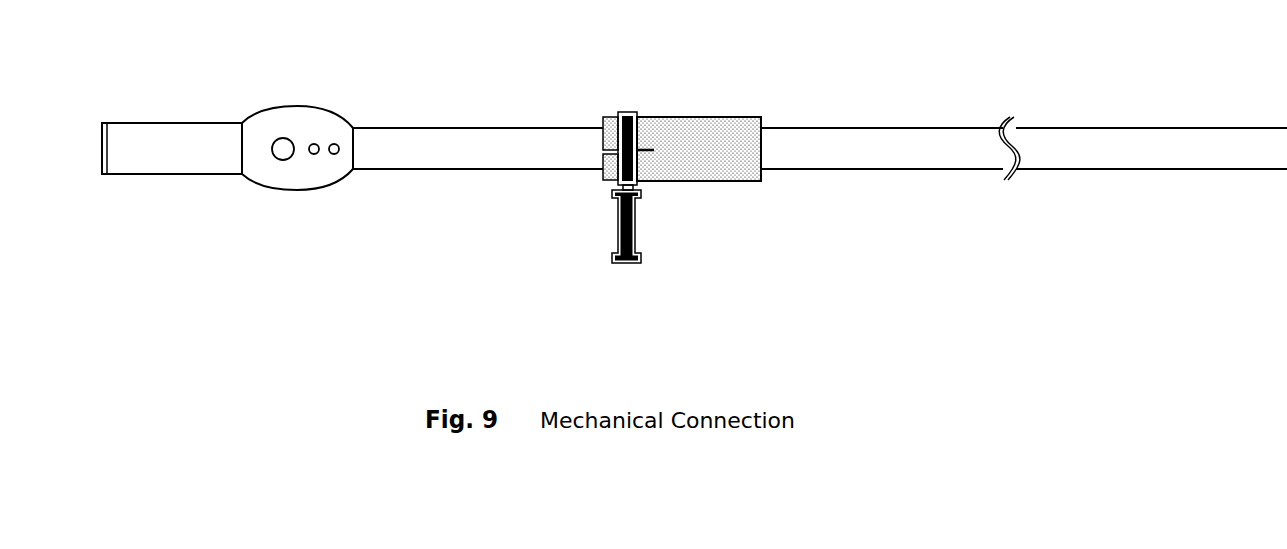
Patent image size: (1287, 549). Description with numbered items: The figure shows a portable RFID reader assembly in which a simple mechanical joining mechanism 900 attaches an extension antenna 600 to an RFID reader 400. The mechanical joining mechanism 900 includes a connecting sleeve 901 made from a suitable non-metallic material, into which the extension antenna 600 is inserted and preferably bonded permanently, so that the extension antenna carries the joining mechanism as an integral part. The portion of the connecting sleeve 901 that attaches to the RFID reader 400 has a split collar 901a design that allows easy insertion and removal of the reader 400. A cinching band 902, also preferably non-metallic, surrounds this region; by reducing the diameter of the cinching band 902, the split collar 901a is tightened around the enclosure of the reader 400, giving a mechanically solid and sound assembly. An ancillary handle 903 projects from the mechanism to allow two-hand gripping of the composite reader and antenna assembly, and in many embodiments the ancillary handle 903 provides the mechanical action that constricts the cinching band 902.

The RFID reader 400 is at (342, 190).
The extension antenna 600 is at (1028, 180).
The mechanical joining mechanism 900 is at (705, 235).
The connecting sleeve 901 is at (704, 108).
The split collar 901a is at (600, 148).
The cinching band 902 is at (628, 110).
The ancillary handle 903 is at (607, 221).